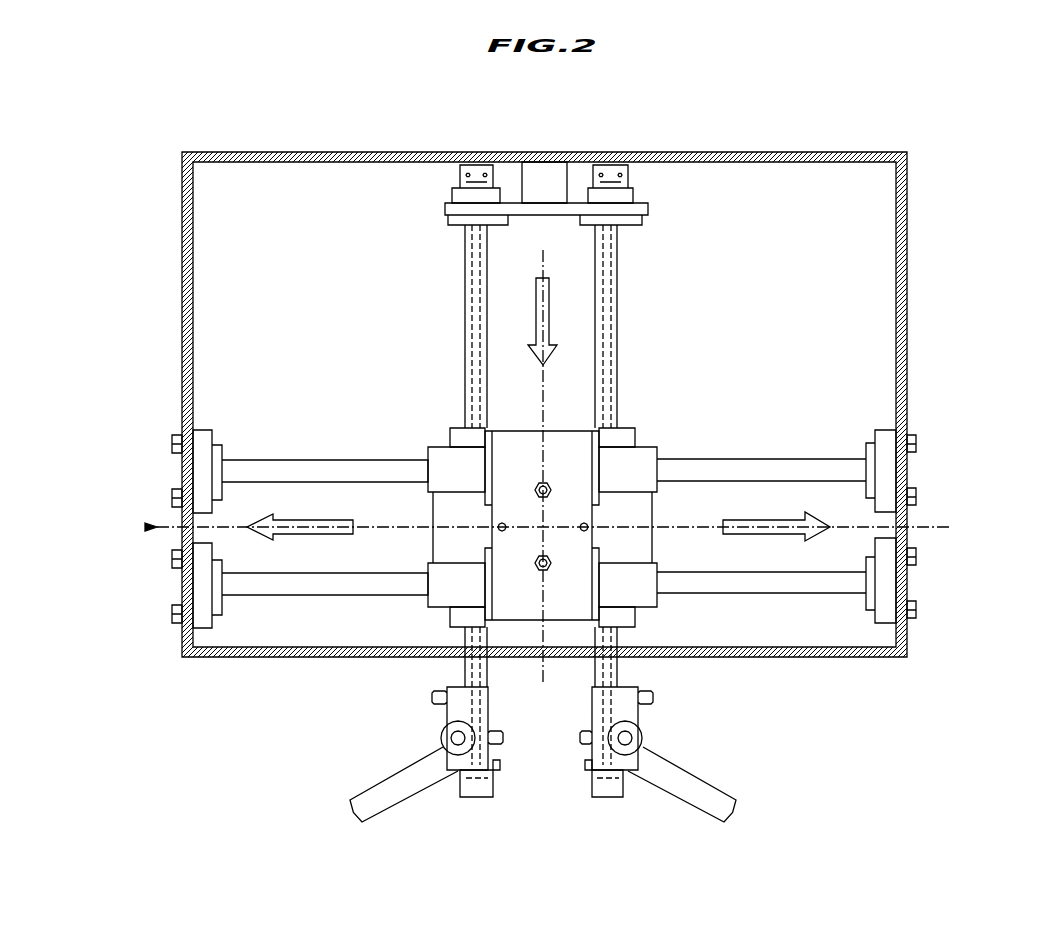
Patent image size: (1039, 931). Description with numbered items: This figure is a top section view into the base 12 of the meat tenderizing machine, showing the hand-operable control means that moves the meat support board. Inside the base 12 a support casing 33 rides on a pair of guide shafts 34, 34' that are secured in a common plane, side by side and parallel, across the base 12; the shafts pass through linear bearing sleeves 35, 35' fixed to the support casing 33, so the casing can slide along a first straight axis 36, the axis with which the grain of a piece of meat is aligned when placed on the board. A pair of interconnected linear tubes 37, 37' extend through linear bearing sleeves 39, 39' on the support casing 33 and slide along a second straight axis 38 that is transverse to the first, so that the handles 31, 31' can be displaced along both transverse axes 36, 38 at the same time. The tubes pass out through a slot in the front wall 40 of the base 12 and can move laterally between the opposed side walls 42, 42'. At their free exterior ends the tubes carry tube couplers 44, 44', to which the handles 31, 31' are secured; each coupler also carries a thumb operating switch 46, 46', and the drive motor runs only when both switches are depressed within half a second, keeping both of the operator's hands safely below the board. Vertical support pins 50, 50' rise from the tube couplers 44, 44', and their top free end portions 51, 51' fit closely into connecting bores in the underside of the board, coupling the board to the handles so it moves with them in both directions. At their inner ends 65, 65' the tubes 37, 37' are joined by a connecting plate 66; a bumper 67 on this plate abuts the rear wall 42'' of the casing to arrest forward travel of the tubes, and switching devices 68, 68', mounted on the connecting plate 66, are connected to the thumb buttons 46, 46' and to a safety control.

The base 12 is at (907, 657).
The handle 31 is at (404, 811).
The handle 31' is at (682, 811).
The support casing 33 is at (568, 450).
The guide shaft 34 is at (310, 459).
The guide shaft 34' is at (310, 593).
The linear bearing sleeve 35 is at (747, 487).
The linear bearing sleeve 35' is at (747, 580).
The first straight axis 36 is at (548, 526).
The linear tube 37 is at (426, 457).
The linear tube 37' is at (664, 457).
The second straight axis 38 is at (542, 468).
The linear bearing sleeve 39 is at (425, 533).
The linear bearing sleeve 39' is at (657, 533).
The front wall 40 is at (290, 658).
The side wall 42 is at (129, 404).
The side wall 42' is at (961, 404).
The rear wall 42'' is at (544, 115).
The tube coupler 44 is at (434, 728).
The tube coupler 44' is at (656, 728).
The thumb operating switch 46 is at (490, 818).
The thumb operating switch 46' is at (591, 818).
The vertical support pin 50 is at (420, 747).
The vertical support pin 50' is at (670, 747).
The top free end portion 51 is at (493, 752).
The top free end portion 51' is at (591, 752).
The inner end 65 is at (422, 495).
The inner end 65' is at (668, 495).
The connecting plate 66 is at (648, 212).
The bumper 67 is at (520, 180).
The switching device 68 is at (432, 184).
The switching device 68' is at (660, 159).